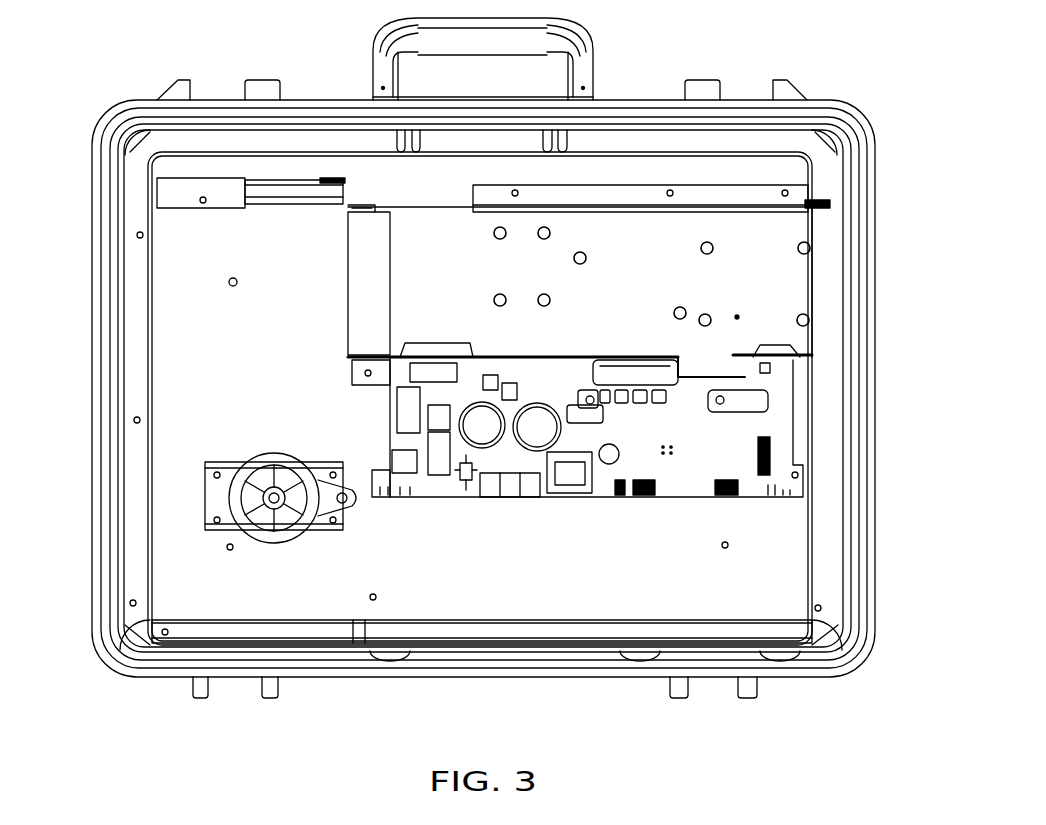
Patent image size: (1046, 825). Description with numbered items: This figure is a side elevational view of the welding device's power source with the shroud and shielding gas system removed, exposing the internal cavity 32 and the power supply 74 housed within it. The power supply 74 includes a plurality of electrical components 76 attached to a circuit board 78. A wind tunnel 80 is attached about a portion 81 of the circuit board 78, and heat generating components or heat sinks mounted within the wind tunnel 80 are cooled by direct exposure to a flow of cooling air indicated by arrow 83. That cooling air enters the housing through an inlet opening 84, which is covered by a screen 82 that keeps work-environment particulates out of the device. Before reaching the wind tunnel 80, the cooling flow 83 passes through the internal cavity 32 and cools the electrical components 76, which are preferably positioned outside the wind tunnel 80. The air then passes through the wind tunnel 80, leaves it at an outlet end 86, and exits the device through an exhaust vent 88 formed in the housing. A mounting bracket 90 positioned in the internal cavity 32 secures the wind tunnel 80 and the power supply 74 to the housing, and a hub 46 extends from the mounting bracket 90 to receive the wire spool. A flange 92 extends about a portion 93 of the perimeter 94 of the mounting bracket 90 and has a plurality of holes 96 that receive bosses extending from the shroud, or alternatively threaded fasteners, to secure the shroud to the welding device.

The internal cavity 32 is at (176, 158).
The hub 46 is at (251, 483).
The power supply 74 is at (609, 512).
The electrical components 76 is at (537, 440).
The circuit board 78 is at (694, 456).
The wind tunnel 80 is at (599, 307).
The portion of circuit board 81 is at (363, 369).
The screen 82 is at (857, 327).
The cooling air flow 83 is at (304, 287).
The inlet opening 84 is at (847, 244).
The outlet end 86 is at (366, 232).
The exhaust vent 88 is at (118, 277).
The mounting bracket 90 is at (175, 296).
The flange 92 is at (137, 366).
The portion of perimeter 93 is at (365, 610).
The perimeter 94 is at (368, 641).
The holes 96 is at (134, 420).